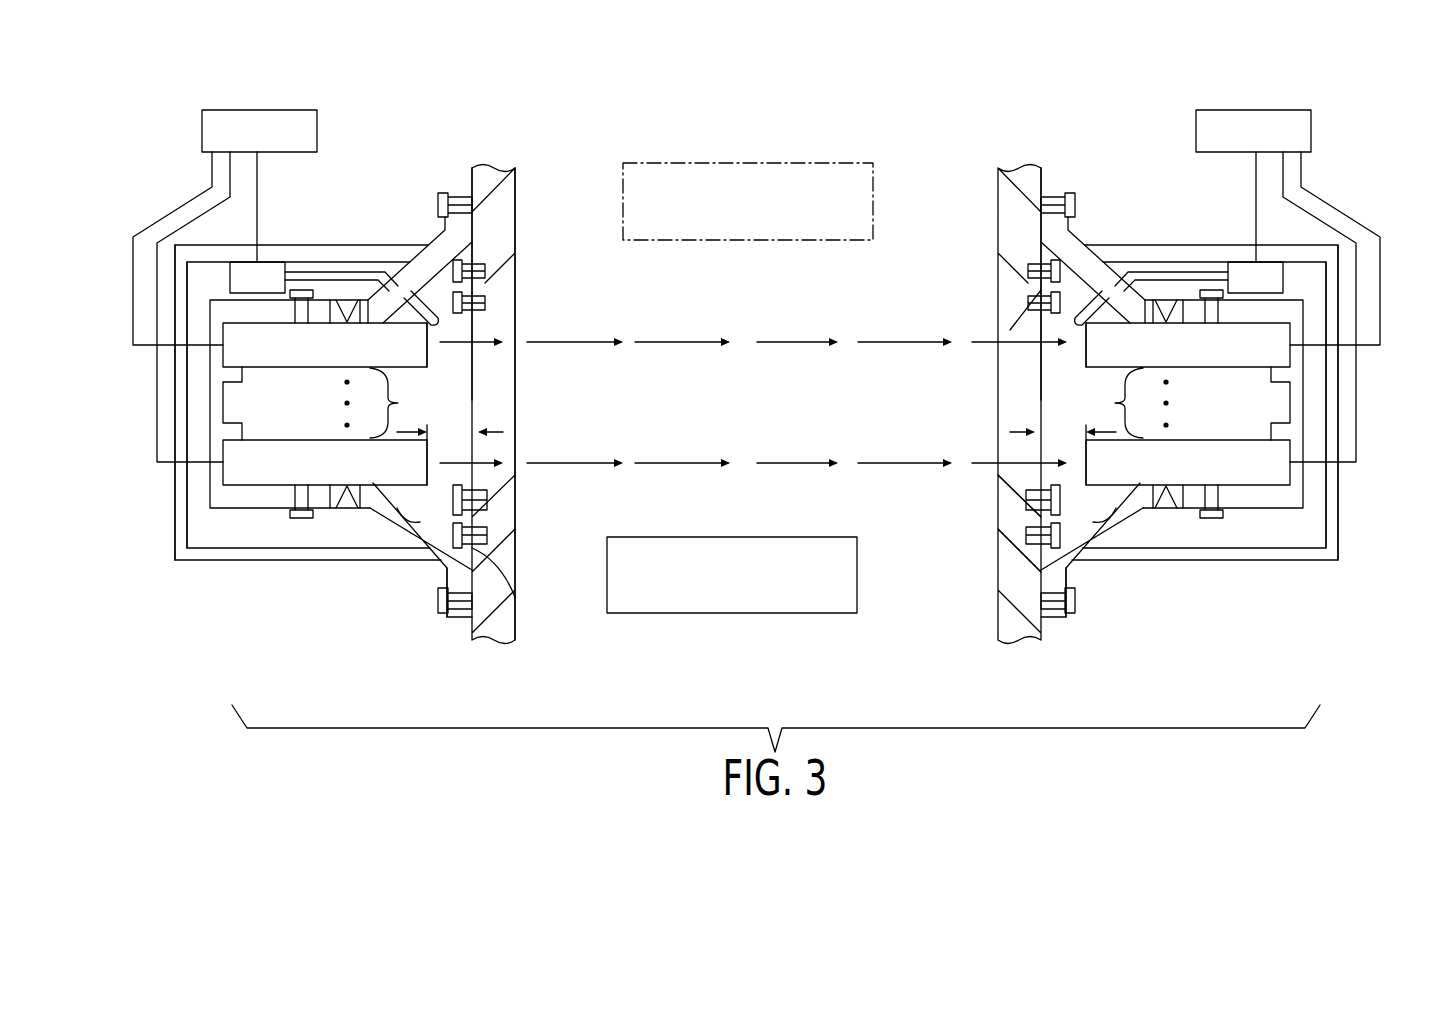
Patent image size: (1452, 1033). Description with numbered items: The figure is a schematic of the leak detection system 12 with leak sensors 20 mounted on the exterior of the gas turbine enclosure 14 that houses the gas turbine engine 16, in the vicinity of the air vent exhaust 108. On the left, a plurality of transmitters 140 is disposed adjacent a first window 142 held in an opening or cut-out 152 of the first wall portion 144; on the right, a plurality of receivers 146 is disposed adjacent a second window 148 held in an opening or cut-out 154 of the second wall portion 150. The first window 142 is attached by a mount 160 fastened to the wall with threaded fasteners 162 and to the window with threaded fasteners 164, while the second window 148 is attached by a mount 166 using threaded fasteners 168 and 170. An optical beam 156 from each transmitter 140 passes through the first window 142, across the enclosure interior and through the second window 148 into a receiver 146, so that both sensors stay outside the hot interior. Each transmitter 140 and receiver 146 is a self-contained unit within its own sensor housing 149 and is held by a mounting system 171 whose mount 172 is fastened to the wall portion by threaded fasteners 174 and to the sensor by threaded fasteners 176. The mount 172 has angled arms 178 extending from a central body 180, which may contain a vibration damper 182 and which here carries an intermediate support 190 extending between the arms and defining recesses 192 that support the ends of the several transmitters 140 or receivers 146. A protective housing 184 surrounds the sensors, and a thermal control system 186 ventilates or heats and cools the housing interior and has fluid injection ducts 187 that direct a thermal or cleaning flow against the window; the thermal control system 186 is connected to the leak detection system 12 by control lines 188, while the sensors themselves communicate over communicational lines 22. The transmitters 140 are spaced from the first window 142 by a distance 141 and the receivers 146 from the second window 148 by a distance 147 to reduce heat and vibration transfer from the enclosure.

The leak detection system 12 is at (202, 143).
The gas turbine enclosure 14 is at (500, 640).
The gas turbine engine 16 is at (857, 578).
The leak sensors 20 is at (245, 605).
The communicational lines 22 is at (195, 217).
The air vent exhaust 108 is at (655, 240).
The transmitter 140 is at (333, 404).
The distance 141 is at (497, 433).
The first window 142 is at (515, 308).
The first wall portion 144 is at (492, 168).
The receiver 146 is at (1174, 404).
The distance 147 is at (1010, 433).
The second window 148 is at (1000, 300).
The sensor housing 149 is at (427, 447).
The second wall portion 150 is at (1012, 168).
The opening or cut-out 152 is at (487, 535).
The opening or cut-out 154 is at (1000, 525).
The optical beam 156 is at (742, 358).
The mount 160 is at (465, 255).
The threaded fasteners 162 is at (515, 565).
The threaded fasteners 164 is at (487, 500).
The mount 166 is at (1030, 245).
The threaded fasteners 168 is at (1035, 270).
The threaded fasteners 170 is at (1035, 310).
The mounting system 171 is at (335, 605).
The mount 172 is at (435, 570).
The threaded fasteners 174 is at (440, 200).
The threaded fasteners 176 is at (300, 290).
The angled arms 178 is at (427, 283).
The central body 180 is at (210, 510).
The vibration damper 182 is at (365, 297).
The protective housing 184 is at (200, 560).
The thermal control system 186 is at (230, 282).
The fluid injection ducts 187 is at (347, 272).
The control lines 188 is at (259, 210).
The intermediate support 190 is at (223, 400).
The recesses 192 is at (755, 403).